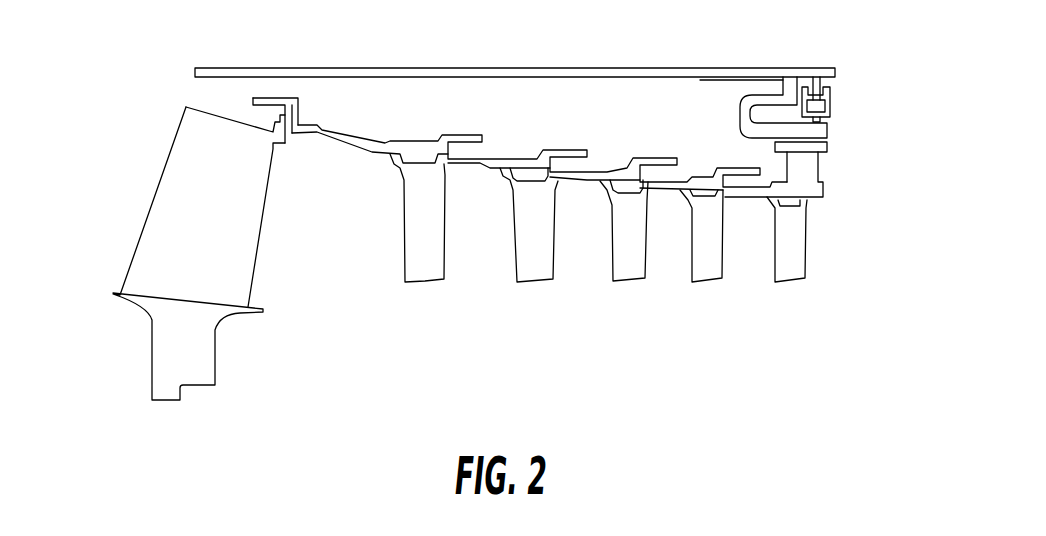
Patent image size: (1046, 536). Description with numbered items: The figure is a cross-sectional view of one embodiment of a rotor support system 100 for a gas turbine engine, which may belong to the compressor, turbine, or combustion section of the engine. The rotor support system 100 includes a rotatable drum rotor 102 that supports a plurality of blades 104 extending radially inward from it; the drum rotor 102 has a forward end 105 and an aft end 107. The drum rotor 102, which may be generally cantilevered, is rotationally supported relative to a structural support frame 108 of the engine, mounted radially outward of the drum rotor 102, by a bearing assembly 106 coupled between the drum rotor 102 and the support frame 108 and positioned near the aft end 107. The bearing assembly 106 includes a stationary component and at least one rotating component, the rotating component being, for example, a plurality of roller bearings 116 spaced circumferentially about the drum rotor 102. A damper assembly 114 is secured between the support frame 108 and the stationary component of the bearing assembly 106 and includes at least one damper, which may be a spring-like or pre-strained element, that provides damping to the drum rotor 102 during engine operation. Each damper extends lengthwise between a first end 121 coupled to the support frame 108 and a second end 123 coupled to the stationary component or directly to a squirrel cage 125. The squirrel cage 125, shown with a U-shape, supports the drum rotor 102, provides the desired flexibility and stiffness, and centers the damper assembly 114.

The rotor support system 100 is at (93, 109).
The rotatable drum rotor 102 is at (387, 134).
The blades 104 is at (517, 257).
The forward end 105 is at (272, 98).
The bearing assembly 106 is at (838, 163).
The aft end 107 is at (823, 190).
The support frame 108 is at (660, 60).
The damper assembly 114 is at (835, 92).
The roller bearings 116 is at (830, 108).
The first end 121 is at (817, 70).
The second end 123 is at (830, 120).
The squirrel cage 125 is at (763, 93).